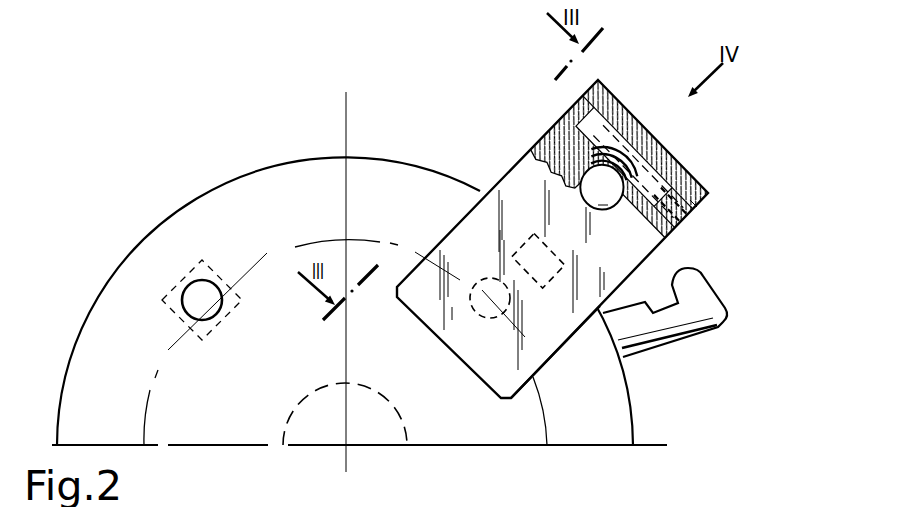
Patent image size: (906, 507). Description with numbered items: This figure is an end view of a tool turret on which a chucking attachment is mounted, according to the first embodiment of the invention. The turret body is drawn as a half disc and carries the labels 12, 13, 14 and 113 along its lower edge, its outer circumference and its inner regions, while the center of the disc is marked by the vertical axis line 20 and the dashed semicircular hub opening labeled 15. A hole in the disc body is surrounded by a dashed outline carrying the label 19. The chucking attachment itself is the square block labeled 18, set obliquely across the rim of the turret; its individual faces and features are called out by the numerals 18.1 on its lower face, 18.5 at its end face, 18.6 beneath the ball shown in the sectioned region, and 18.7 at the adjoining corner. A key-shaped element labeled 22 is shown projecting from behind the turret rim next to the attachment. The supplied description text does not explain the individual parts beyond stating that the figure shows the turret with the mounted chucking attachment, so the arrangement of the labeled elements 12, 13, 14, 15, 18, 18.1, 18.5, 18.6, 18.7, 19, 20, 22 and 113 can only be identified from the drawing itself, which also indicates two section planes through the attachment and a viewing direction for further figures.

The disc body 12 is at (150, 403).
The disc bottom edge 13 is at (359, 476).
The outer circumference 14 is at (635, 417).
The central hub bore 15 is at (295, 410).
The locking block 18 is at (552, 237).
The block lower face 18.1 is at (560, 353).
The block end face 18.5 is at (703, 182).
The ball bore 18.6 is at (603, 205).
The block corner 18.7 is at (697, 203).
The hole chamfer 19 is at (236, 302).
The center axis 20 is at (362, 196).
The key 22 is at (715, 328).
The outer rim 113 is at (225, 178).